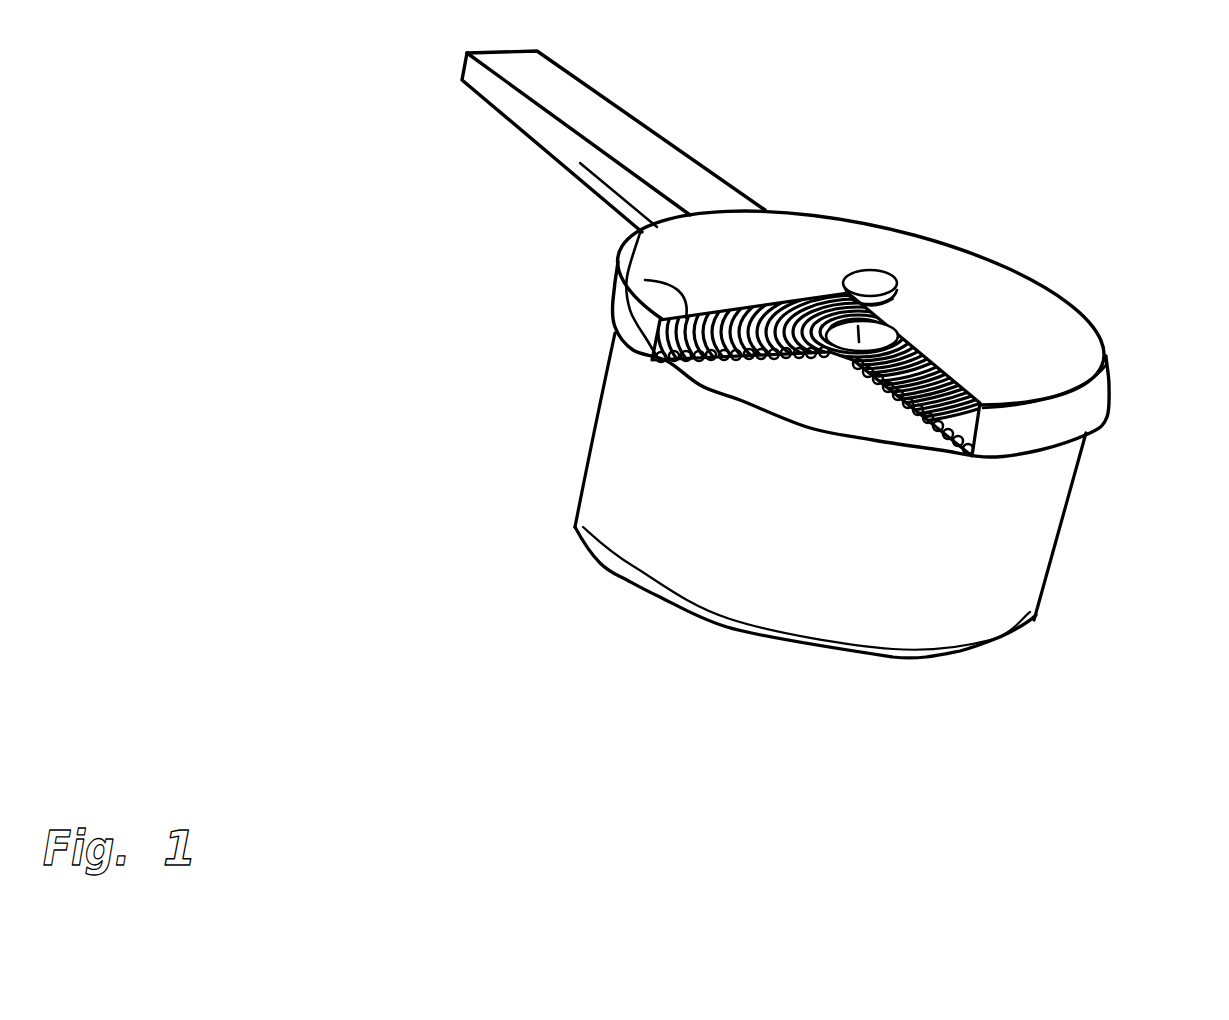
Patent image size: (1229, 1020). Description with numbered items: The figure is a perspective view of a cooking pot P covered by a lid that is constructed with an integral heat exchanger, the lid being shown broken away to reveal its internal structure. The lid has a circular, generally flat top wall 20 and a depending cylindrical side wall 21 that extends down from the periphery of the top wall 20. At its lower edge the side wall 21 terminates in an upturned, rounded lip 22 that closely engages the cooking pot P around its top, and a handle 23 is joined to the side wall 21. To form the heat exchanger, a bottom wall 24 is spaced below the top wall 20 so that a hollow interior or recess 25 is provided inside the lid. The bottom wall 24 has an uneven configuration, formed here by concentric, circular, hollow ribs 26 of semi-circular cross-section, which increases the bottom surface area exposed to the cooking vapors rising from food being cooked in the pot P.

The top wall 20 is at (1013, 297).
The side wall 21 is at (1053, 423).
The lip 22 is at (667, 362).
The handle 23 is at (573, 100).
The bottom wall 24 is at (806, 371).
The recess 25 is at (675, 305).
The hollow ribs 26 is at (730, 357).
The cooking pot P is at (1010, 563).